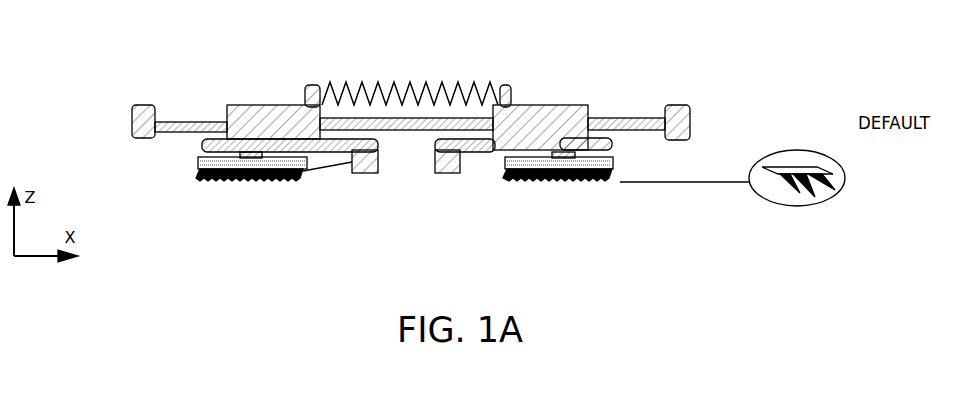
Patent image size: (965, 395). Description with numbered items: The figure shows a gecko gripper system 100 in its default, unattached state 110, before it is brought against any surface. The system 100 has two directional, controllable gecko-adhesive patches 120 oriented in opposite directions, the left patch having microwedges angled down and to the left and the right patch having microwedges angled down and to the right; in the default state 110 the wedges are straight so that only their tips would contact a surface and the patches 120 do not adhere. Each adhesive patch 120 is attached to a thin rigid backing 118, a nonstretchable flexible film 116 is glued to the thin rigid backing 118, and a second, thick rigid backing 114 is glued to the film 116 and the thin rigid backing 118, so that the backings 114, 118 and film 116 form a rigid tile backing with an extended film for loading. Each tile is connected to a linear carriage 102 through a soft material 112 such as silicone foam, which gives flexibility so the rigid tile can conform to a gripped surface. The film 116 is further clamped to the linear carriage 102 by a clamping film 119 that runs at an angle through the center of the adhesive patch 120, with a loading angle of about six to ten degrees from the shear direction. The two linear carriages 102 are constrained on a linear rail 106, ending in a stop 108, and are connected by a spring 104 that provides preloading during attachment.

The gecko gripper system 100 is at (172, 84).
The linear carriage 102 is at (280, 105).
The spring 104 is at (430, 88).
The linear rail 106 is at (628, 118).
The end stop knob 108 is at (675, 104).
The default state 110 is at (820, 205).
The soft material 112 is at (248, 150).
The thick rigid backing 114 is at (198, 162).
The nonstretchable flexible film 116 is at (197, 168).
The thin rigid backing 118 is at (197, 171).
The clamping film 119 is at (327, 170).
The gecko-adhesive patch 120 is at (207, 178).